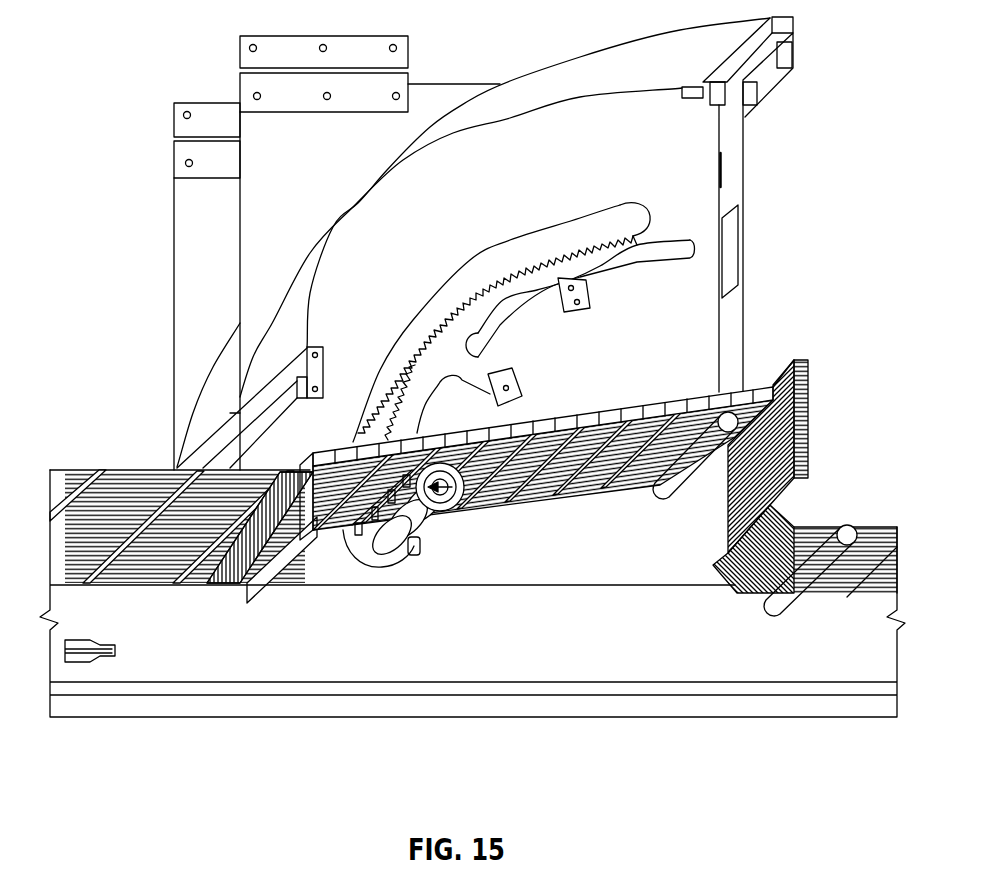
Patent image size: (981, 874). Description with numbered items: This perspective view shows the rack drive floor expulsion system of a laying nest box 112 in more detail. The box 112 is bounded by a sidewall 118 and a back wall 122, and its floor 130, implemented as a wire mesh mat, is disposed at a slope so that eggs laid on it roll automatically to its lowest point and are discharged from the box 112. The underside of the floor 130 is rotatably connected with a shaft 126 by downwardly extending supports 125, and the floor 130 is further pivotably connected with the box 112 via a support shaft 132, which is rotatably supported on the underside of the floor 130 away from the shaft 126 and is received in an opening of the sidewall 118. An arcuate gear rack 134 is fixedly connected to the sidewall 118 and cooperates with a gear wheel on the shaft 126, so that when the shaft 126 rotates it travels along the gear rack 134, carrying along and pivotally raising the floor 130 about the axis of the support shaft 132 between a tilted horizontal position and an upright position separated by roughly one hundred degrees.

The box 112 is at (828, 147).
The sidewall 118 is at (647, 145).
The back wall 122 is at (654, 70).
The downwardly extending support 125 is at (362, 545).
The shaft 126 is at (472, 500).
The floor 130 is at (645, 398).
The support shaft 132 is at (662, 494).
The gear rack 134 is at (480, 361).